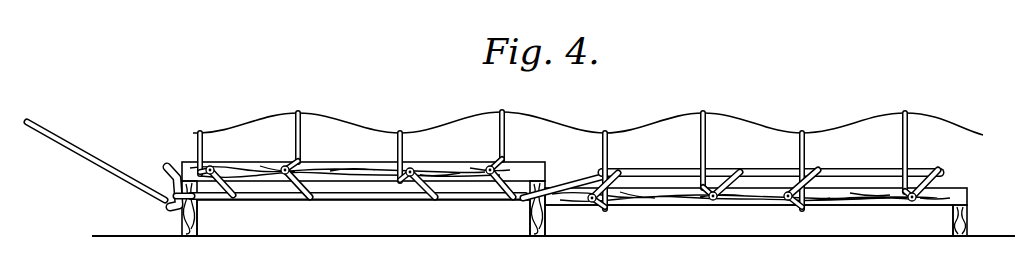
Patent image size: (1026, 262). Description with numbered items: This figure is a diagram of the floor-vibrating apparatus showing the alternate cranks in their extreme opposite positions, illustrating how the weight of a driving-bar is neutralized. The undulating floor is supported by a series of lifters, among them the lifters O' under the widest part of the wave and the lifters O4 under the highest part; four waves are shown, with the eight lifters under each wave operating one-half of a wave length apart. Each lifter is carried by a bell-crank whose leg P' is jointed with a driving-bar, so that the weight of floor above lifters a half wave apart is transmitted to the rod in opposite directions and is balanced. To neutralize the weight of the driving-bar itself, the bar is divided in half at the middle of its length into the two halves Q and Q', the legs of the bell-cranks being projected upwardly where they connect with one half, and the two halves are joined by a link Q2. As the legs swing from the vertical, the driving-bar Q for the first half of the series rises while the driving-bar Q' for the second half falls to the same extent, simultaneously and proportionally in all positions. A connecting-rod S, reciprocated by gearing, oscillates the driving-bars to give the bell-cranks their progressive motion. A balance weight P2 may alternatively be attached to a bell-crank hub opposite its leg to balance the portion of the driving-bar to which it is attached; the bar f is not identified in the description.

The connecting-rod S is at (98, 166).
The wooden beam / frame bar f is at (257, 172).
The balance weight P2 is at (931, 185).
The driving-bar Q is at (363, 218).
The link Q2 is at (749, 219).
The lifter O' is at (522, 168).
The lifter O4 is at (507, 134).
The driving-bar half Q' is at (771, 152).
The bell-crank leg P' is at (545, 205).